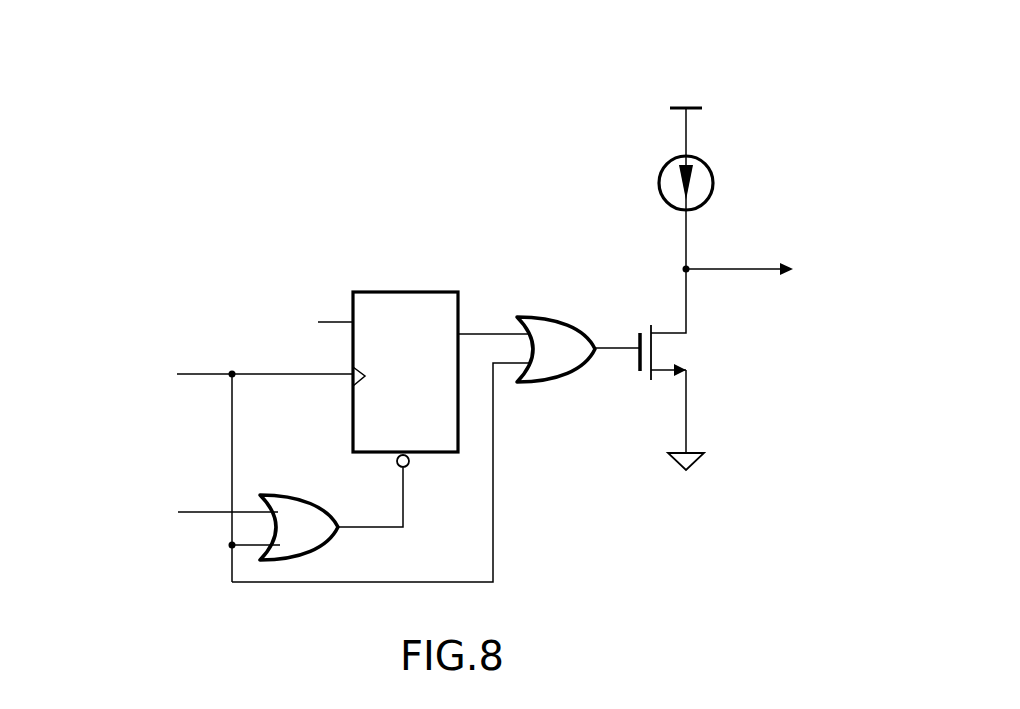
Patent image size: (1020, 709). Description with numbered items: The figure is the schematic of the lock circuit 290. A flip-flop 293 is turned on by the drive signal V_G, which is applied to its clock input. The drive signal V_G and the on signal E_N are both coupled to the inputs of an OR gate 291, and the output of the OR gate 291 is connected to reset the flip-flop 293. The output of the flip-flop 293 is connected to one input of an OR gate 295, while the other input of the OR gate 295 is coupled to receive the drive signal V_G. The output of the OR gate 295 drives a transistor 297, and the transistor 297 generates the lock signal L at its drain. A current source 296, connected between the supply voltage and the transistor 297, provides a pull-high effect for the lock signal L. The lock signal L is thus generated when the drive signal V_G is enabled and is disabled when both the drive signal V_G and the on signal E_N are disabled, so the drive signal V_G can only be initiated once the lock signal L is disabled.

The lock circuit 290 is at (853, 73).
The OR gate 291 is at (272, 495).
The flip-flop 293 is at (378, 292).
The OR gate 295 is at (536, 316).
The current source 296 is at (729, 160).
The transistor 297 is at (684, 348).